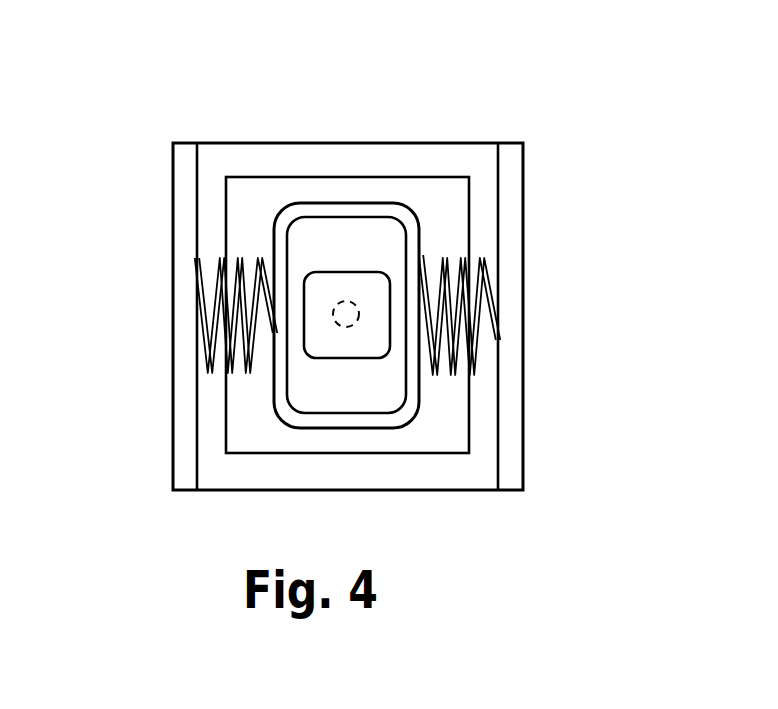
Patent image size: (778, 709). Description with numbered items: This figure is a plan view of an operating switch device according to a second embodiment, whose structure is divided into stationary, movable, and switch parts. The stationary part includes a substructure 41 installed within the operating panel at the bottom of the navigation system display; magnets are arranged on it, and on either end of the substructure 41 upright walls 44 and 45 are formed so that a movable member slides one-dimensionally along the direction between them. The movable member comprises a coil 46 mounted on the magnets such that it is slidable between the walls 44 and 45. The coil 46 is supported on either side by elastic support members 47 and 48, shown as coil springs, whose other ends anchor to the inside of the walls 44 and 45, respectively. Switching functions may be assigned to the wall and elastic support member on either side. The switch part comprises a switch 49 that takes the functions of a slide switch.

The substructure 41 is at (435, 152).
The upright wall 44 is at (182, 226).
The upright wall 45 is at (508, 205).
The coil 46 is at (330, 208).
The elastic support member 47 is at (197, 343).
The elastic support member 48 is at (480, 350).
The switch 49 is at (318, 343).